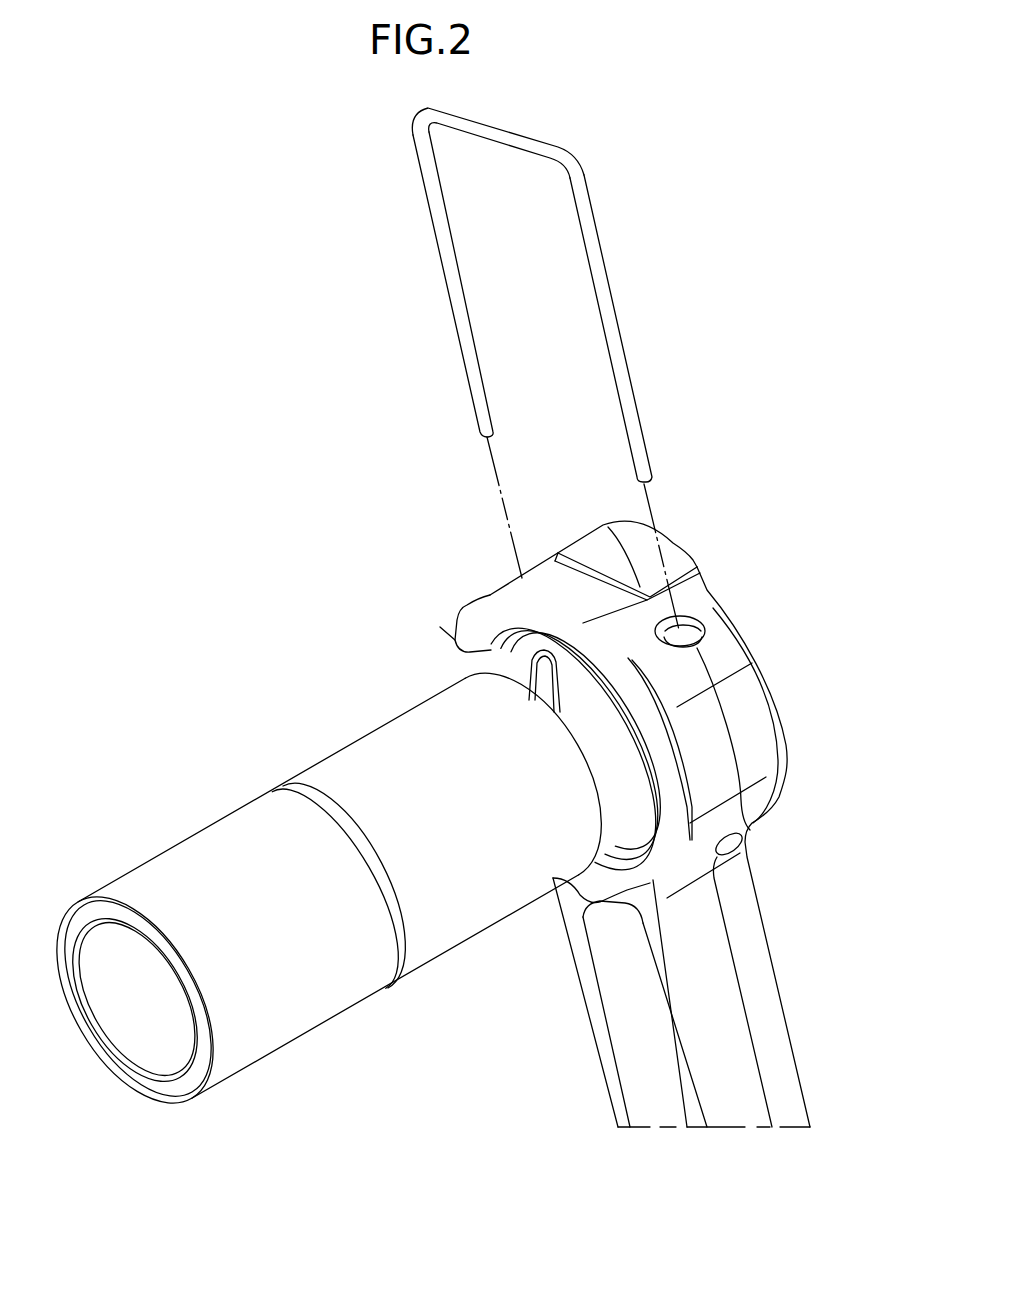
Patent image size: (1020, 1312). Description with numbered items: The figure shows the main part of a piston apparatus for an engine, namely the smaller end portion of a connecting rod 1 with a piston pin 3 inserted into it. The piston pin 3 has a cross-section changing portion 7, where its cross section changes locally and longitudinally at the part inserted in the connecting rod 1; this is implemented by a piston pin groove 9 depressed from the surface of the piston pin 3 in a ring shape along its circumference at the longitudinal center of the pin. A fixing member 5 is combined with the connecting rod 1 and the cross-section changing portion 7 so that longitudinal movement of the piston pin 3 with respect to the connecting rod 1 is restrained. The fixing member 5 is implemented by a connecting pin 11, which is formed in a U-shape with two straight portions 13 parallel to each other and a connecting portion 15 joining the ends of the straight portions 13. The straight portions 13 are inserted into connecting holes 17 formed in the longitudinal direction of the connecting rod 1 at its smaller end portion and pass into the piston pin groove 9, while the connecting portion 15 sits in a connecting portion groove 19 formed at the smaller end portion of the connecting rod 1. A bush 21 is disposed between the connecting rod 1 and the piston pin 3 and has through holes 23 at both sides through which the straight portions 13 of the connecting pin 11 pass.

The connecting rod 1 is at (763, 998).
The piston pin 3 is at (168, 848).
The fixing member 5 is at (582, 190).
The cross-section changing portion 7 is at (317, 800).
The piston pin groove 9 is at (338, 885).
The connecting pin 11 is at (272, 215).
The straight portions 13 is at (440, 233).
The connecting portion 15 is at (493, 133).
The connecting holes 17 is at (688, 637).
The connecting portion groove 19 is at (637, 537).
The bush 21 is at (458, 645).
The through holes 23 is at (540, 677).